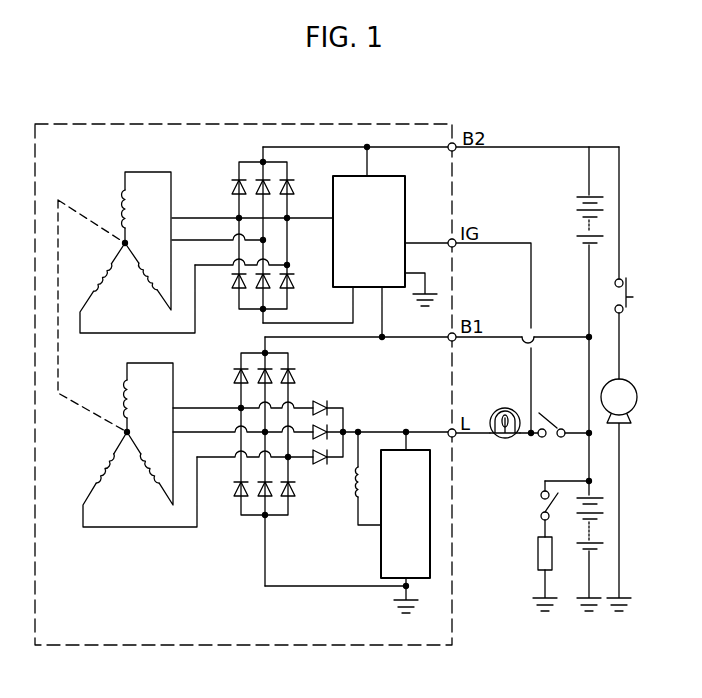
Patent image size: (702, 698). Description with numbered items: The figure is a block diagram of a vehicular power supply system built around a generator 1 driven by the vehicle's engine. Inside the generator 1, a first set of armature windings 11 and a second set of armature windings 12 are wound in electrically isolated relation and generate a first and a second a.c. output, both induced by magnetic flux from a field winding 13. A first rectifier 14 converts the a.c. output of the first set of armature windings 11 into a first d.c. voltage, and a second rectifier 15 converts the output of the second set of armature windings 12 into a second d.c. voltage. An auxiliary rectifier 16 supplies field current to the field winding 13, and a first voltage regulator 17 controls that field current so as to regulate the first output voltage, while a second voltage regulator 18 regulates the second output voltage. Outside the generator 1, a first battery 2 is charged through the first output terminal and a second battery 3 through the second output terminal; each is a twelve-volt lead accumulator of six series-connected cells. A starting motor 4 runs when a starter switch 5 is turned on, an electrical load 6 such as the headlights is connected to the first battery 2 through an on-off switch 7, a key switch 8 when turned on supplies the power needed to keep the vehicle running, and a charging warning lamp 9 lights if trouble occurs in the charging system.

The generator 1 is at (455, 632).
The first battery 2 is at (586, 520).
The second battery 3 is at (577, 213).
The starting motor 4 is at (638, 398).
The starter switch 5 is at (615, 314).
The electrical load 6 is at (538, 554).
The on-off switch 7 is at (540, 507).
The key switch 8 is at (546, 413).
The charging warning lamp 9 is at (505, 438).
The first set of armature windings 11 is at (122, 455).
The second set of armature windings 12 is at (121, 265).
The field winding 13 is at (357, 497).
The first rectifier 14 is at (237, 493).
The second rectifier 15 is at (233, 286).
The auxiliary rectifier 16 is at (316, 463).
The first voltage regulator 17 is at (381, 556).
The second voltage regulator 18 is at (333, 190).